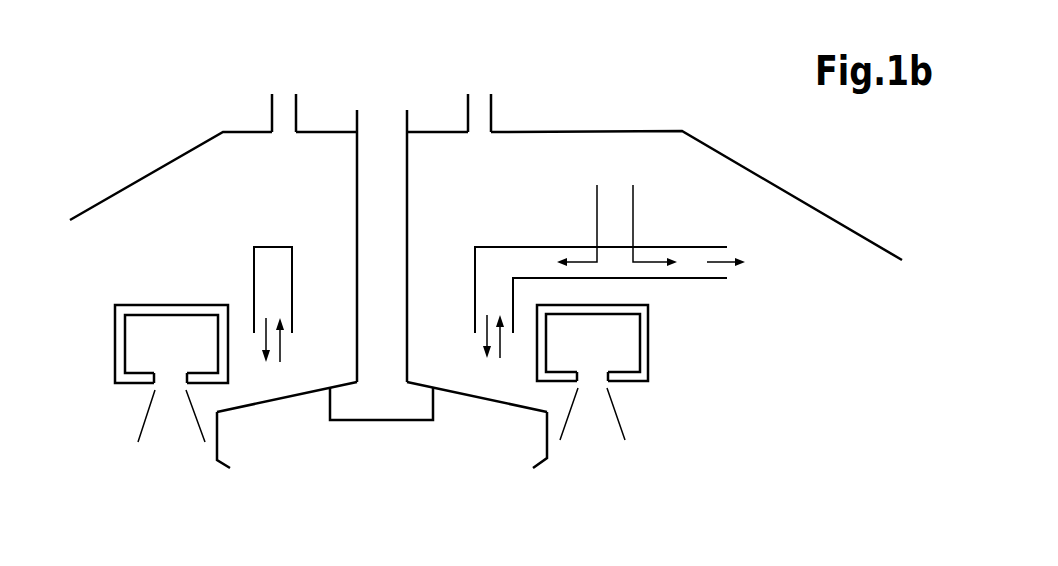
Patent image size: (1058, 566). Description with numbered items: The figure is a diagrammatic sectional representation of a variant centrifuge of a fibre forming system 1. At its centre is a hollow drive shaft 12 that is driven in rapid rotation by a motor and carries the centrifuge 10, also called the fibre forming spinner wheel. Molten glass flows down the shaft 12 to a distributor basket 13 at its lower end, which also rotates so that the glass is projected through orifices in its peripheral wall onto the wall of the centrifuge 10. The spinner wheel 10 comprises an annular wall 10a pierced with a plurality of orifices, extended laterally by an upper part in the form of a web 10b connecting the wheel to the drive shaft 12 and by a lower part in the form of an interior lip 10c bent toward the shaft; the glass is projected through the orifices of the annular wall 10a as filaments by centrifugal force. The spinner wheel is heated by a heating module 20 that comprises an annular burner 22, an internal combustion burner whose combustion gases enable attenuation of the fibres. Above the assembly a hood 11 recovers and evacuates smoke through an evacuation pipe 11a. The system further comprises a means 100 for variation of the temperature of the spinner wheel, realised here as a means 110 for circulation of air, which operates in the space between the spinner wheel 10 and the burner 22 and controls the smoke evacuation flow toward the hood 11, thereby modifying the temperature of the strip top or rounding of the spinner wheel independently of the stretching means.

The fibre forming system 1 is at (158, 100).
The centrifuge 10 is at (557, 473).
The annular wall 10a is at (220, 435).
The web 10b is at (263, 403).
The interior lip 10c is at (225, 466).
The hood 11 is at (707, 124).
The evacuation pipe 11a is at (272, 110).
The drive shaft 12 is at (357, 205).
The distributor basket 13 is at (363, 420).
The heating module 20 is at (662, 355).
The annular burner 22 is at (635, 383).
The means for variation of the temperature of the spinner wheel 100 is at (722, 213).
The means for circulation of air 110 is at (254, 272).